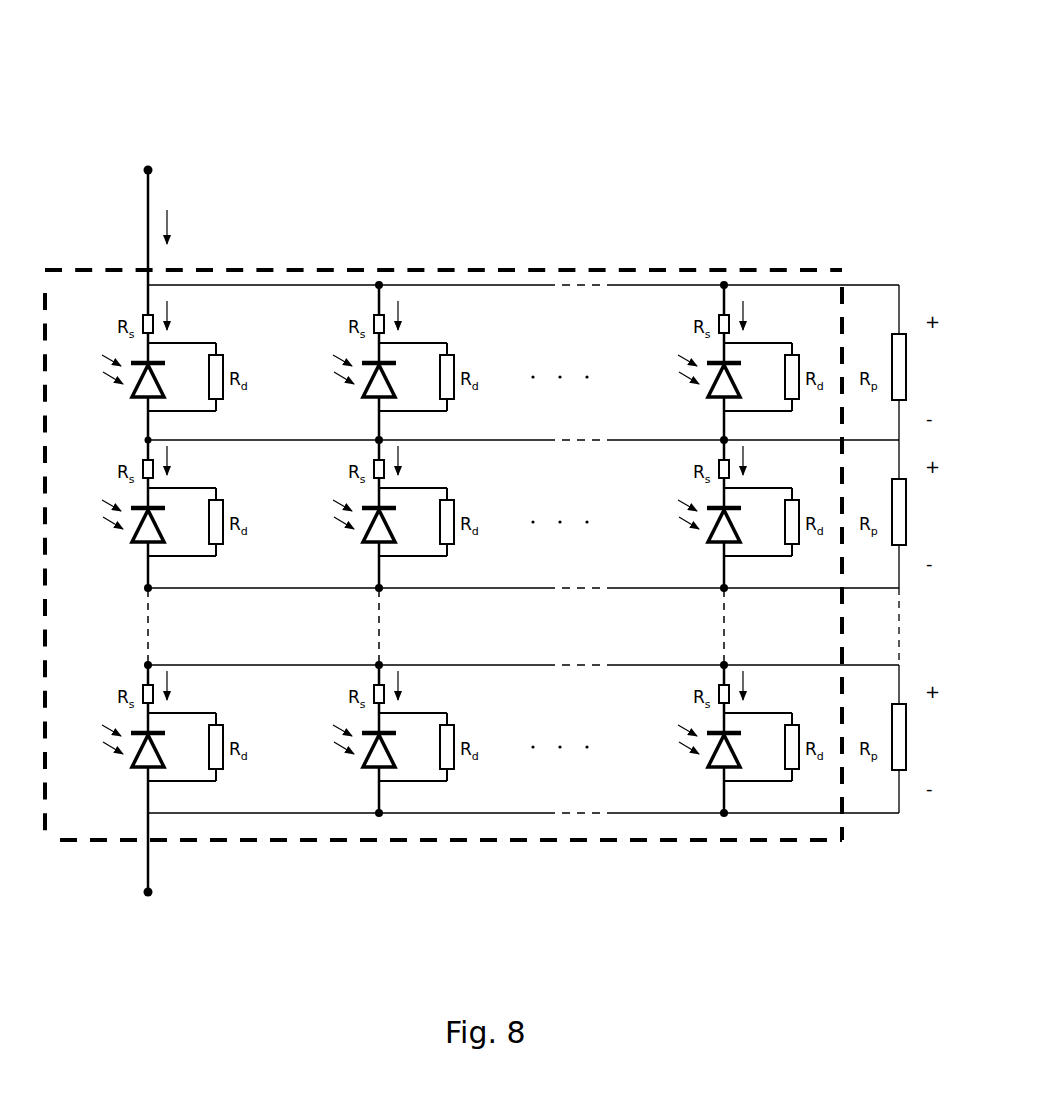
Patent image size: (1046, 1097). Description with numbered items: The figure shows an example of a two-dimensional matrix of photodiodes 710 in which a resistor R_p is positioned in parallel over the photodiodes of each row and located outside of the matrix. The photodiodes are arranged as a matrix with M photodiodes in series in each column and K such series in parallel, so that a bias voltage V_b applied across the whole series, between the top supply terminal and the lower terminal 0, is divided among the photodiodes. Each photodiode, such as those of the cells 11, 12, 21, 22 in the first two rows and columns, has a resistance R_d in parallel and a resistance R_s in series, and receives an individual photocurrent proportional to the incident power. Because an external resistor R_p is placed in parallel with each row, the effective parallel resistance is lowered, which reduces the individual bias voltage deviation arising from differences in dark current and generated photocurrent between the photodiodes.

The photodiode array circuit 710 is at (266, 72).
The ground terminal 0 is at (159, 859).
The photodiode cell (1,1) 11 is at (154, 356).
The photodiode cell (1,2) 12 is at (385, 356).
The photodiode cell (2,1) 21 is at (154, 501).
The photodiode cell (2,2) 22 is at (385, 501).